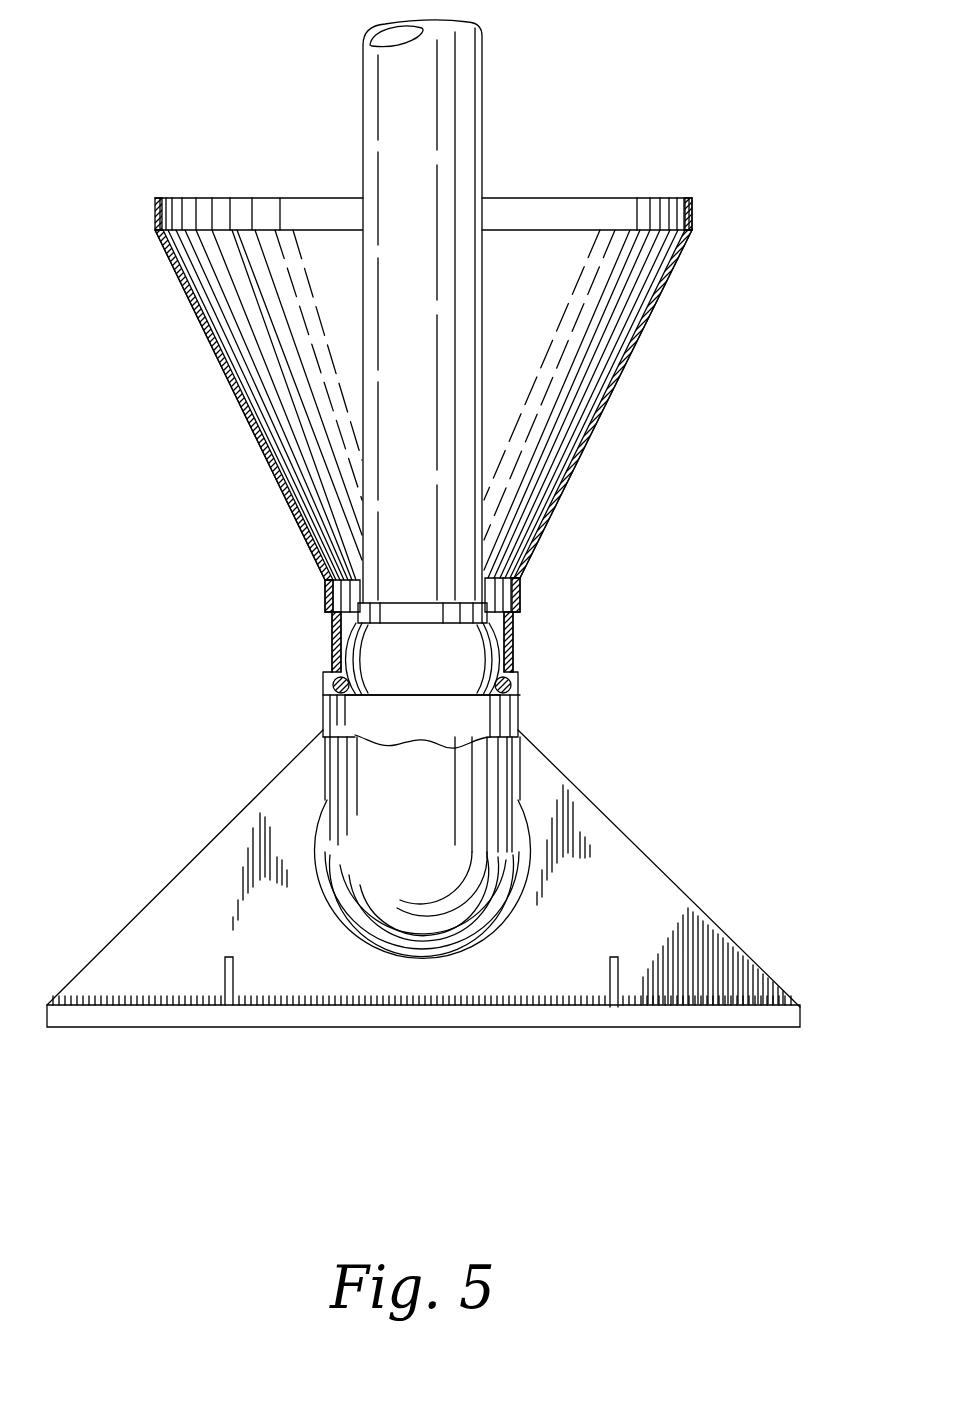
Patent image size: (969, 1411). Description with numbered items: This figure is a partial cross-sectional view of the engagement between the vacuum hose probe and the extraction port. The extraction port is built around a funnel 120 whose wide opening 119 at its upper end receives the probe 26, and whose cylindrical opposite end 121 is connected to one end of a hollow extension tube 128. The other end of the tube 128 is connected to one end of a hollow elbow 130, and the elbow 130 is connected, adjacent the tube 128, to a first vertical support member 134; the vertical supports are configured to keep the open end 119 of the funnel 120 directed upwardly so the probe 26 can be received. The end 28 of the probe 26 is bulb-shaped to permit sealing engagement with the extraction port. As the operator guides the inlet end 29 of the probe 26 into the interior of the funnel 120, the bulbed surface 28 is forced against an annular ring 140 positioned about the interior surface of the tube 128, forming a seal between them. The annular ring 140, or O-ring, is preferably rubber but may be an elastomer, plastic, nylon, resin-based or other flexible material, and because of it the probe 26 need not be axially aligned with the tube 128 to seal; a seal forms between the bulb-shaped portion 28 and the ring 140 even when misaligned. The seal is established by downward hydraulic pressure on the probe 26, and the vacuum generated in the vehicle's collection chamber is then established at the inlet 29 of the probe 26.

The probe 26 is at (483, 107).
The wide opening 119 is at (645, 197).
The funnel 120 is at (617, 377).
The bulb-shaped end 28 is at (495, 545).
The cylindrical opposite end 121 is at (325, 595).
The hollow extension tube 128 is at (518, 645).
The annular ring 140 is at (330, 688).
The hollow elbow 130 is at (518, 707).
The inlet 29 is at (382, 698).
The first vertical support member 134 is at (650, 857).